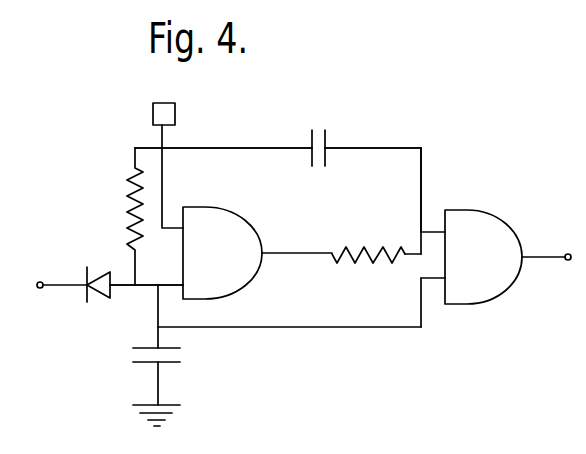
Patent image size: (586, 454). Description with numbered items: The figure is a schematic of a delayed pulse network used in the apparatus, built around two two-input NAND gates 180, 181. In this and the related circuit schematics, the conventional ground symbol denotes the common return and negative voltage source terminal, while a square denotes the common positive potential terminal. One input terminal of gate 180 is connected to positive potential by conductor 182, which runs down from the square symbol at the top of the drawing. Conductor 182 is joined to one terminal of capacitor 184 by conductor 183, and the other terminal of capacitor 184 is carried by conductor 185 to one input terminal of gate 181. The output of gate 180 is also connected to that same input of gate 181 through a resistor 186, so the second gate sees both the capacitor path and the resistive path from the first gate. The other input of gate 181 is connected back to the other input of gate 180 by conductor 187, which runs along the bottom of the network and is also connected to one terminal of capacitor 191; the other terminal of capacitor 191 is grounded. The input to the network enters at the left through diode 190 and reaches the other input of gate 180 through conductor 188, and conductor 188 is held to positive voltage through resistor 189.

The two-input NAND gate 180 is at (238, 238).
The two-input NAND gate 181 is at (481, 229).
The conductor 182 is at (162, 201).
The conductor 183 is at (270, 149).
The capacitor 184 is at (326, 143).
The conductor 185 is at (422, 178).
The resistor 186 is at (348, 247).
The conductor 187 is at (290, 327).
The conductor 188 is at (137, 287).
The resistor 189 is at (127, 220).
The diode 190 is at (100, 293).
The capacitor 191 is at (175, 362).